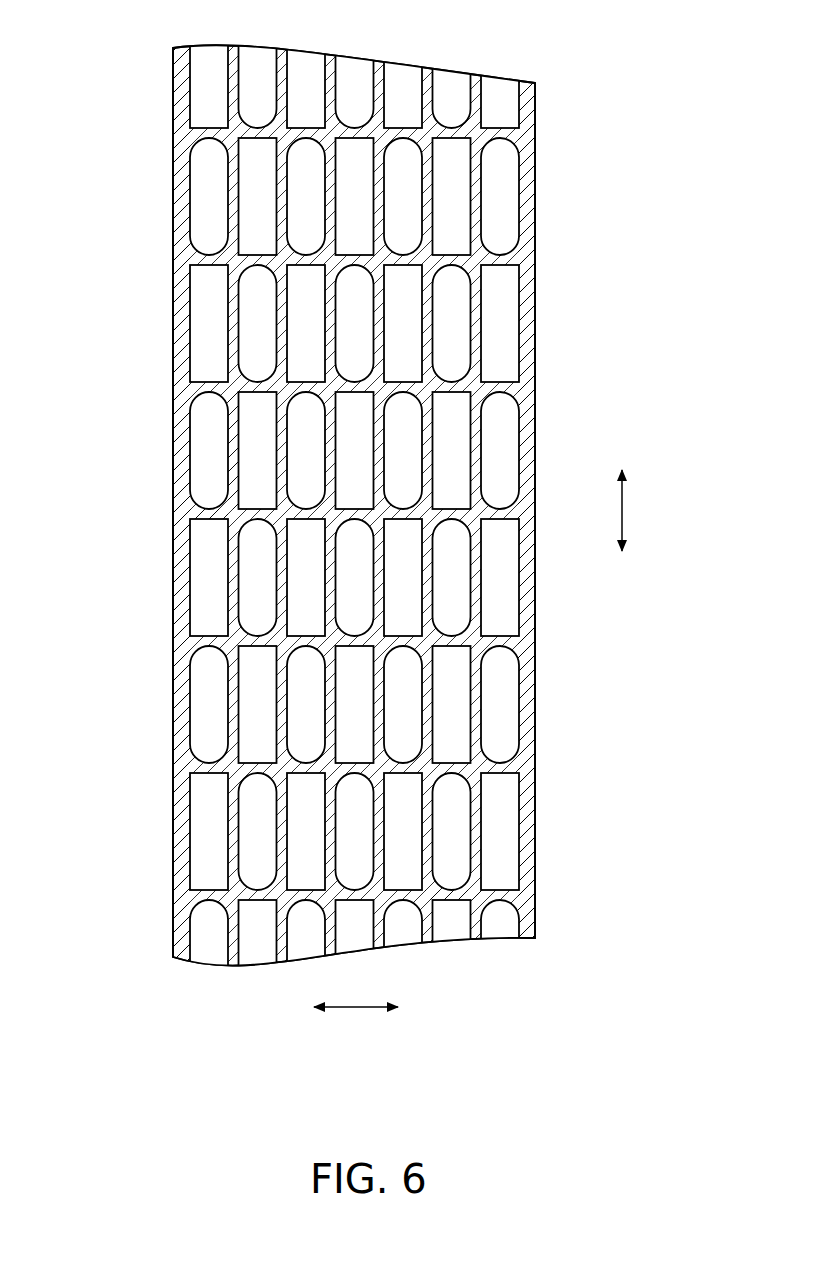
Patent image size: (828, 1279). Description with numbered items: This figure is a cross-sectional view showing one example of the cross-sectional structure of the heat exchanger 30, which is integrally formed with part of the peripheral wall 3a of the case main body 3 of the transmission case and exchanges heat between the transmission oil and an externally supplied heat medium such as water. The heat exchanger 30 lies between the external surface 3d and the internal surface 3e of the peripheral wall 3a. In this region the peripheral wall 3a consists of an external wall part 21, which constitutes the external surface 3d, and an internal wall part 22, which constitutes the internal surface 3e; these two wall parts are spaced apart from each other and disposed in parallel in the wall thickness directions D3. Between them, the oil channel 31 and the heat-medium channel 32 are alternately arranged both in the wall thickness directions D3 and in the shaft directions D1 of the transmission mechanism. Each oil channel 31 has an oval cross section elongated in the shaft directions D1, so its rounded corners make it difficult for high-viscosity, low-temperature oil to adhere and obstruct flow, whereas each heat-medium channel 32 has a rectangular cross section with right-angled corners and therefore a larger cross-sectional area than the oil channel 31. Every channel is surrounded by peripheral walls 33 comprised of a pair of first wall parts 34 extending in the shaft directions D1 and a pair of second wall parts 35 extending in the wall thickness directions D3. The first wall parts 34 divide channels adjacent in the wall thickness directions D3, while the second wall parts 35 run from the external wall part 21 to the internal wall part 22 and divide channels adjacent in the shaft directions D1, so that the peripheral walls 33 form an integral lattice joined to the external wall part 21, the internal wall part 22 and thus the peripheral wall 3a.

The case main body 3 is at (376, 544).
The peripheral wall 3a is at (536, 210).
The external surface 3d is at (535, 238).
The internal surface 3e is at (172, 238).
The external wall part 21 is at (527, 567).
The internal wall part 22 is at (187, 590).
The heat exchanger 30 is at (453, 927).
The oil channel 31 is at (354, 514).
The heat-medium channel 32 is at (354, 514).
The peripheral walls 33 is at (147, 461).
The first wall parts 34 is at (232, 470).
The second wall parts 35 is at (203, 528).
The shaft directions D1 is at (625, 512).
The wall thickness directions D3 is at (358, 1010).